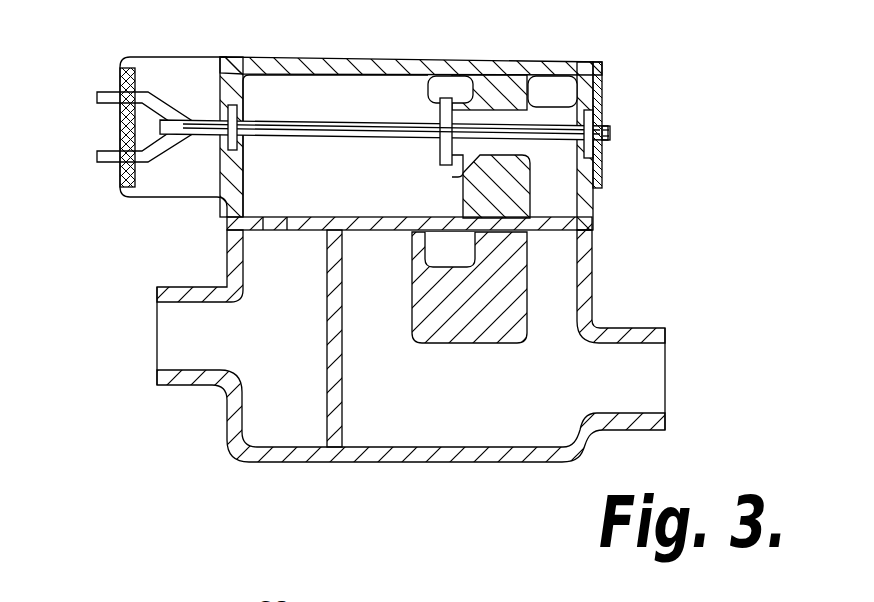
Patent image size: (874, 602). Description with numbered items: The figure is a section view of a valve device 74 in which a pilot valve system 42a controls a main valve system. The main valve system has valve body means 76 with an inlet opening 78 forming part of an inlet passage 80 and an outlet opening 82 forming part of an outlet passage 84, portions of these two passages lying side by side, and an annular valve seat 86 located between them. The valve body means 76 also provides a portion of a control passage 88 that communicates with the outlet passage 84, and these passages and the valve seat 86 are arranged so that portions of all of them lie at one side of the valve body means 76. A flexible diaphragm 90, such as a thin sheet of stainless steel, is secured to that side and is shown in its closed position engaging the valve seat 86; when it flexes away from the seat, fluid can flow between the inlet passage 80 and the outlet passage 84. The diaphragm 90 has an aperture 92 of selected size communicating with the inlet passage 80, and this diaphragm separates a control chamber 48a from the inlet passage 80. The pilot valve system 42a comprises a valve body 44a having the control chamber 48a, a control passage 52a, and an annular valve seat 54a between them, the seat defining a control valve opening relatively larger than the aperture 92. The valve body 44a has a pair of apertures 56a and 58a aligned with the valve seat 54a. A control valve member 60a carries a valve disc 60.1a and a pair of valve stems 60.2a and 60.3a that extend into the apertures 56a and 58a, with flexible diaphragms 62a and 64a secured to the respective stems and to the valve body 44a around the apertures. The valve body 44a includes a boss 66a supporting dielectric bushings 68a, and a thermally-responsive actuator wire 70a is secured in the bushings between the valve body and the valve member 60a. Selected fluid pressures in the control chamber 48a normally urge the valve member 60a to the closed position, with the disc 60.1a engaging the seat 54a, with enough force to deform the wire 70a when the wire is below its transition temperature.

The valve system 42a is at (522, 55).
The valve body 44a is at (411, 48).
The control chamber 48a is at (347, 180).
The control passage 52a is at (572, 201).
The annular valve seat 54a is at (455, 165).
The aperture 56a is at (243, 98).
The aperture 58a is at (562, 137).
The control valve member 60a is at (426, 141).
The valve disc 60.1a is at (442, 75).
The valve stem 60.2a is at (391, 110).
The valve stem 60.3a is at (536, 127).
The flexible diaphragm 62a is at (200, 137).
The flexible diaphragm 64a is at (635, 125).
The boss 66a is at (165, 199).
The dielectric bushings 68a is at (108, 122).
The thermally-responsive actuator wire 70a is at (183, 95).
The valve device 74 is at (671, 170).
The valve body means 76 is at (621, 286).
The inlet opening 78 is at (169, 288).
The inlet passage 80 is at (240, 350).
The outlet opening 82 is at (684, 379).
The outlet passage 84 is at (480, 407).
The annular valve seat 86 is at (340, 233).
The control passage 88 is at (567, 292).
The flexible diaphragm 90 is at (264, 226).
The aperture 92 is at (294, 226).